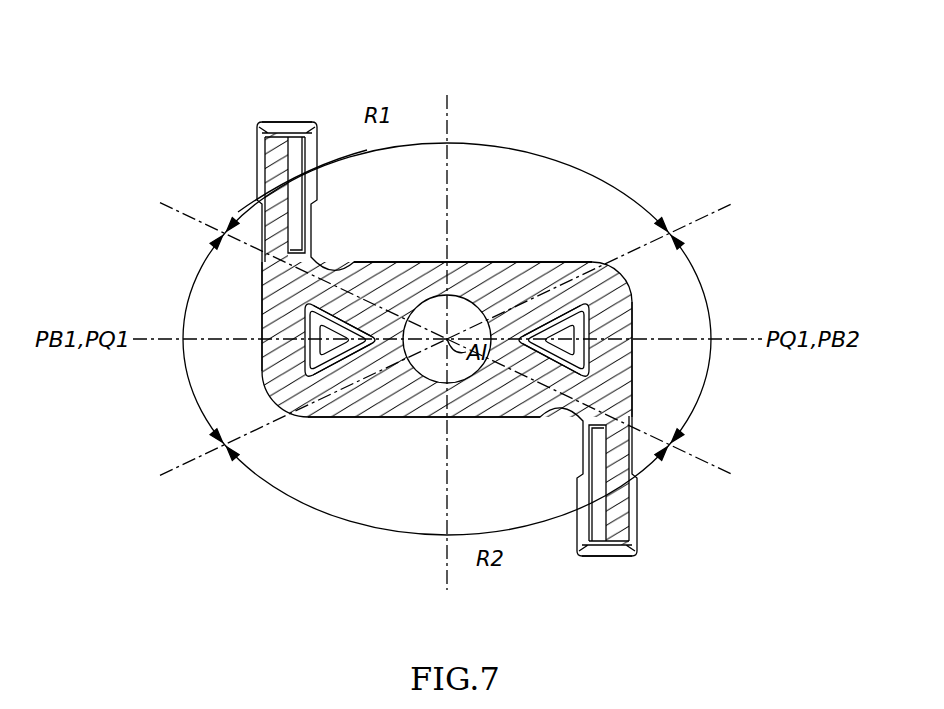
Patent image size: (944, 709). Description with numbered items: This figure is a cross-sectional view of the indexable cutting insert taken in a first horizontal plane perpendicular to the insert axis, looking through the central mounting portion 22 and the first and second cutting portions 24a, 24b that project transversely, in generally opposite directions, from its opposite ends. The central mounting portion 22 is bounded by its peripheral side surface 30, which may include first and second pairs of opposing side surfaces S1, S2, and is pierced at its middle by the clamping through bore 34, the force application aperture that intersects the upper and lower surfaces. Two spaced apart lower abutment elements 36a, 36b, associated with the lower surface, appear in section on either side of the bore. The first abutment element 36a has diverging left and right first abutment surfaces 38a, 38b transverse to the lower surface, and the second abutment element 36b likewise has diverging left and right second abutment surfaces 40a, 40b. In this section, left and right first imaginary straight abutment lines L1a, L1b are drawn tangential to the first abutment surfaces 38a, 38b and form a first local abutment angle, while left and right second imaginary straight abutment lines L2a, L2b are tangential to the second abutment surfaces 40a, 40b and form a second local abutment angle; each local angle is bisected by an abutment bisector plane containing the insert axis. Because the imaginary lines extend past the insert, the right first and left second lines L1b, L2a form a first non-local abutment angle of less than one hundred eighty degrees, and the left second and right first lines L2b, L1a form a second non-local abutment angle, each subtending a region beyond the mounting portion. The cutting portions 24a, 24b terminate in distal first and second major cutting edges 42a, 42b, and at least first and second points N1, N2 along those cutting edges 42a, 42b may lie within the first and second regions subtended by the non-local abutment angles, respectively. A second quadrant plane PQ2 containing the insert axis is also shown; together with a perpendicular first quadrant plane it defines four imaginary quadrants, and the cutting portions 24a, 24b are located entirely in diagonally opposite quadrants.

The central mounting portion 22 is at (474, 420).
The first cutting portion 24a is at (261, 160).
The second cutting portion 24b is at (641, 512).
The peripheral side surface 30 is at (427, 258).
The clamping through bore 34 is at (413, 334).
The first lower abutment element 36a is at (327, 347).
The second lower abutment element 36b is at (567, 347).
The left first abutment surface 38a is at (357, 375).
The right first abutment surface 38b is at (350, 322).
The left second abutment surface 40a is at (540, 325).
The right second abutment surface 40b is at (535, 378).
The first major cutting edge 42a is at (298, 124).
The second major cutting edge 42b is at (606, 558).
The first point N1 is at (266, 126).
The second point N2 is at (636, 553).
The first pair of opposing side surfaces S1 is at (480, 260).
The second pair of opposing side surfaces S2 is at (262, 310).
The second quadrant plane PQ2 is at (447, 341).
The left first imaginary straight abutment line L1a is at (283, 417).
The right first imaginary straight abutment line L1b is at (283, 262).
The left second imaginary straight abutment line L2a is at (610, 260).
The right second imaginary straight abutment line L2b is at (611, 413).